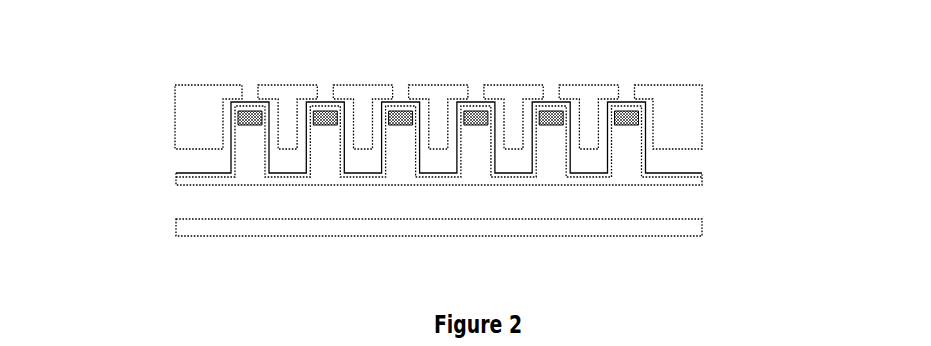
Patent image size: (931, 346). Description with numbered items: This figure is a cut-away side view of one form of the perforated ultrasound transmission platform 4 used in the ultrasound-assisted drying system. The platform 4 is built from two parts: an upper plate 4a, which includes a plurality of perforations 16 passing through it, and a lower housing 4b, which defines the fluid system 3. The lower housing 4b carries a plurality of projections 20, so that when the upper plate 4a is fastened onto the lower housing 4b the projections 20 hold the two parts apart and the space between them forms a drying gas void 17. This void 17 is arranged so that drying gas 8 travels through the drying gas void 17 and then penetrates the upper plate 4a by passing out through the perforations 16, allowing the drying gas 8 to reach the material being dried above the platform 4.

The US transmission platform 4 is at (95, 80).
The upper plate 4a is at (682, 100).
The lower housing 4b is at (700, 163).
The drying gas 8 is at (247, 80).
The perforations 16 is at (628, 86).
The drying gas void 17 is at (439, 141).
The projections 20 is at (397, 148).
The fluid system 3 is at (442, 200).